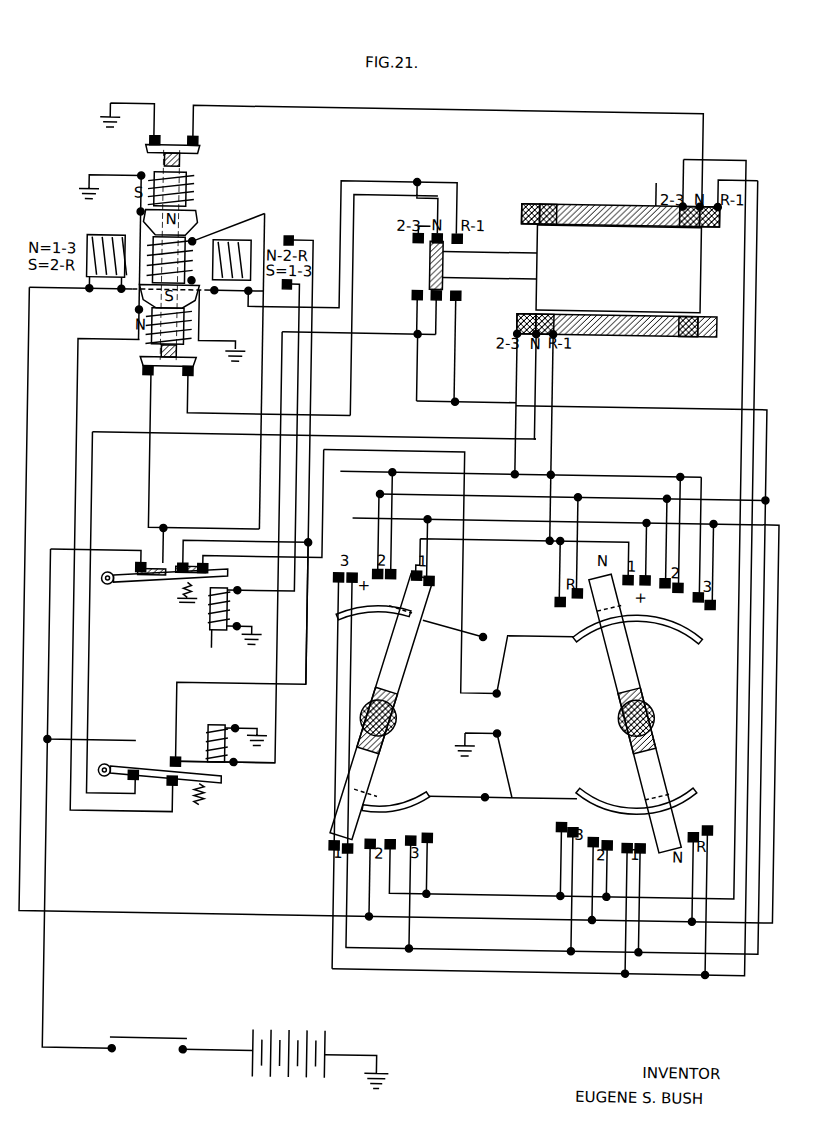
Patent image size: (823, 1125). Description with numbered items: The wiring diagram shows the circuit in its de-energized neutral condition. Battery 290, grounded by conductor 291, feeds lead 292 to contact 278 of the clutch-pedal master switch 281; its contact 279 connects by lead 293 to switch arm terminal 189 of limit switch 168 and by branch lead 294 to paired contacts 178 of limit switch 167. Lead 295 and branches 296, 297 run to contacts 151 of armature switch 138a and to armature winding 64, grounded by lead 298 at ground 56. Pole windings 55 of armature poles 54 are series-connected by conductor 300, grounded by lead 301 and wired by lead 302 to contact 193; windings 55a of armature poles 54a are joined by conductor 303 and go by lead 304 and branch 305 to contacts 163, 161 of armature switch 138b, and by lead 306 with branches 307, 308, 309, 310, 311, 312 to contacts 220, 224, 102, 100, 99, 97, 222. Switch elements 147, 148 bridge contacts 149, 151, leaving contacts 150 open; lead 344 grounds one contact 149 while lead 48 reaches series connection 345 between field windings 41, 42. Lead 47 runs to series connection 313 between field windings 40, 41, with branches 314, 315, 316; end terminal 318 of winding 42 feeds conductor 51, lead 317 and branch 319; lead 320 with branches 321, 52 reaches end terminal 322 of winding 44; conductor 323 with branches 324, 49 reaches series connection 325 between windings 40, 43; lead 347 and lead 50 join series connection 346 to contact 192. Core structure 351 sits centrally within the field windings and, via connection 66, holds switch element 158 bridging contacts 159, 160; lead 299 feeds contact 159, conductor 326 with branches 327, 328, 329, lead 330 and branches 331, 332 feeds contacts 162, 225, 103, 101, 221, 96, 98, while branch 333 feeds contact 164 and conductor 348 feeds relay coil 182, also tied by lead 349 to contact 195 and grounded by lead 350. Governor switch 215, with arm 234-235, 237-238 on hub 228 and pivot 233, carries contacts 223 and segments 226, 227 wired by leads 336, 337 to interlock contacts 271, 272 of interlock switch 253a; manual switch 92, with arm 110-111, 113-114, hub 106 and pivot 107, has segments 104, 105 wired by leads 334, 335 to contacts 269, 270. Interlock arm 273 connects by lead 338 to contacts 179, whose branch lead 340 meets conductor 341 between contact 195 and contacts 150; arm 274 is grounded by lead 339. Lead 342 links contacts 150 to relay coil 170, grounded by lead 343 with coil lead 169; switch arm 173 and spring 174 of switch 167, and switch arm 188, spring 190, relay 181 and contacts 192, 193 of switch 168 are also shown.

The ground lead 344 is at (122, 104).
The brush terminals 149 is at (190, 136).
The conductor 48 is at (596, 99).
The brush holder plate 147 is at (198, 151).
The insulating section 138a is at (160, 159).
The field coil 54 is at (186, 177).
The field coil 55 is at (195, 200).
The ground lead 301 is at (106, 176).
The junction 300 is at (137, 213).
The winding 54a is at (92, 236).
The winding 55a is at (112, 236).
The armature coil 64 is at (186, 271).
The contact 150 is at (289, 234).
The junction 303 is at (137, 312).
The conductor 298 is at (201, 326).
The ground 56 is at (221, 342).
The conductor 302 is at (79, 390).
The brush holder plate 148 is at (143, 362).
The brush terminals 151 is at (188, 378).
The conductor 306 is at (32, 452).
The conductor 296 is at (153, 468).
The conductor 297 is at (264, 467).
The junction 295 is at (166, 532).
The contact 178 is at (146, 560).
The contact 179 is at (189, 560).
The conductor 340 is at (239, 555).
The relay armature 173 is at (106, 585).
The spring 174 is at (191, 592).
The relay 167 is at (206, 621).
The relay coil 170 is at (234, 605).
The coil lead 169 is at (217, 643).
The ground 343 is at (258, 646).
The conductor 341 is at (313, 641).
The conductor 342 is at (285, 387).
The conductor 294 is at (55, 639).
The conductor 293 is at (58, 972).
The contact 195 is at (183, 756).
The relay 181 is at (232, 722).
The relay coil 182 is at (218, 724).
The ground 350 is at (265, 733).
The junction 349 is at (216, 748).
The contact 189 is at (141, 770).
The relay armature 188 is at (158, 767).
The conductor 192 is at (154, 811).
The contact 193 is at (177, 785).
The spring 190 is at (208, 789).
The relay 168 is at (257, 808).
The switch 281 is at (162, 1038).
The switch contact 279 is at (125, 1052).
The switch contact 278 is at (196, 1053).
The conductor 292 is at (229, 1051).
The battery 290 is at (302, 1078).
The ground 291 is at (378, 1052).
The conductor 304 is at (354, 171).
The conductor 305 is at (418, 224).
The conductor 299 is at (352, 248).
The contact 161 is at (413, 237).
The contact 159 is at (437, 228).
The contact 163 is at (463, 234).
The insulating section 138b is at (428, 258).
The switch bar 158 is at (444, 266).
The conductor 66 is at (505, 274).
The contact 162 is at (413, 292).
The contact 160 is at (433, 296).
The contact 164 is at (462, 292).
The conductor 348 is at (401, 333).
The conductor 333 is at (458, 357).
The conductor 52 is at (516, 387).
The conductor 347 is at (453, 433).
The conductor 50 is at (538, 440).
The conductor 49 is at (557, 456).
The contact 322 is at (516, 328).
The contact segment 346 is at (553, 311).
The contact bar 325 is at (573, 331).
The contact bar 40 is at (636, 199).
The contact segment 44 is at (529, 198).
The contact segment 43 is at (548, 198).
The contact segment 41 is at (688, 219).
The contact segment 42 is at (712, 219).
The contact 313 is at (662, 184).
The conductor 345 is at (682, 150).
The conductor 47 is at (727, 151).
The conductor 318 is at (737, 205).
The conductor 51 is at (762, 201).
The housing 351 is at (640, 263).
The conductor 326 is at (667, 398).
The conductor 320 is at (642, 468).
The conductor 321 is at (706, 466).
The conductor 330 is at (606, 490).
The conductor 331 is at (583, 505).
The conductor 332 is at (671, 507).
The conductor 323 is at (501, 534).
The conductor 324 is at (565, 538).
The conductor 311 is at (660, 530).
The conductor 310 is at (713, 539).
The conductor 312 is at (434, 546).
The contact pair 220 is at (345, 580).
The contact pair 221 is at (390, 576).
The contact pair 222 is at (440, 576).
The pointer arm 234-235 is at (398, 656).
The contact segment 226 is at (366, 619).
The contact segment 227 is at (414, 793).
The pivot block 228 is at (376, 712).
The pivot 233 is at (403, 693).
The selector 215 is at (354, 723).
The pointer arm 237-238 is at (370, 766).
The contact arm 336 is at (452, 623).
The conductor 338 is at (471, 597).
The contact 271 is at (490, 628).
The conductor 334 is at (564, 629).
The conductor 269 is at (515, 635).
The conductor 273 is at (511, 682).
The ground 339 is at (473, 725).
The switch 253a is at (520, 716).
The conductor 274 is at (516, 754).
The conductor 270 is at (521, 795).
The conductor 337 is at (471, 792).
The junction 272 is at (494, 795).
The contact pair 223 is at (339, 843).
The contact pair 224 is at (390, 836).
The contact pair 225 is at (438, 830).
The conductor 314 is at (438, 856).
The conductor 307 is at (382, 913).
The conductor 327 is at (427, 909).
The pointer arm 110-111 is at (636, 652).
The contact segment 104 is at (592, 632).
The contact segment 105 is at (617, 797).
The pivot block 106 is at (668, 713).
The pivot 107 is at (630, 723).
The selector 92 is at (606, 718).
The pointer arm 113-114 is at (663, 749).
The conductor 335 is at (575, 784).
The contact pair 96 is at (583, 593).
The contact pair 97 is at (632, 578).
The contact pair 98 is at (671, 581).
The contact pair 99 is at (706, 595).
The contact pair 103 is at (582, 821).
The contact pair 102 is at (616, 833).
The contact pair 101 is at (648, 836).
The conductor 316 is at (637, 863).
The contact pair 100 is at (706, 823).
The conductor 317 is at (718, 861).
The conductor 315 is at (570, 854).
The conductor 308 is at (604, 912).
The conductor 309 is at (703, 910).
The conductor 328 is at (584, 943).
The conductor 329 is at (651, 943).
The conductor 319 is at (640, 966).